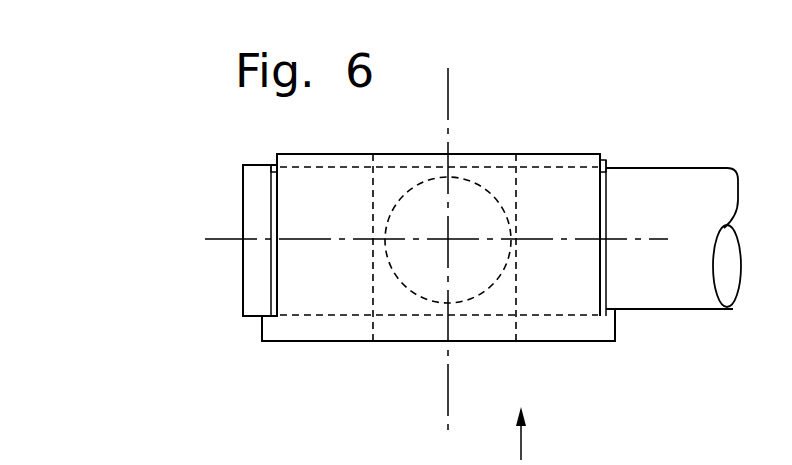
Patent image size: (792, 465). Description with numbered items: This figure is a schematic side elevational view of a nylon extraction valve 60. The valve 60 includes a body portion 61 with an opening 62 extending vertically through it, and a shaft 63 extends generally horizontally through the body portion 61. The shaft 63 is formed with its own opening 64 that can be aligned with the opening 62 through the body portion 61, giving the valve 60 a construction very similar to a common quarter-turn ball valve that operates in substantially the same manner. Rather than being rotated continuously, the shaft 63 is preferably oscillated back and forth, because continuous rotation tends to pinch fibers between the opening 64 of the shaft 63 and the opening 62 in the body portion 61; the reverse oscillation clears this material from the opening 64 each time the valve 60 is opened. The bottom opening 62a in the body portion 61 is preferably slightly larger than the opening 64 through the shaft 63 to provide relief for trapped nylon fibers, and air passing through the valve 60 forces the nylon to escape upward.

The valve 60 is at (476, 263).
The body portion 61 is at (562, 153).
The opening 62 is at (515, 163).
The bottom opening 62a is at (513, 325).
The shaft 63 is at (668, 168).
The opening 64 is at (430, 193).